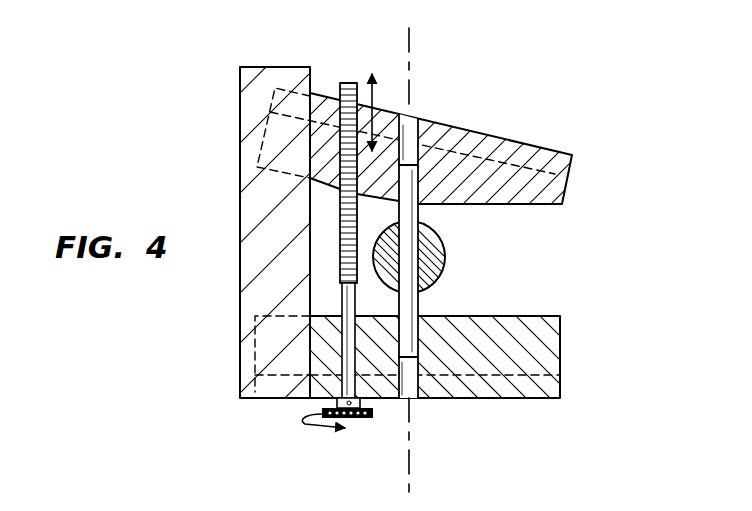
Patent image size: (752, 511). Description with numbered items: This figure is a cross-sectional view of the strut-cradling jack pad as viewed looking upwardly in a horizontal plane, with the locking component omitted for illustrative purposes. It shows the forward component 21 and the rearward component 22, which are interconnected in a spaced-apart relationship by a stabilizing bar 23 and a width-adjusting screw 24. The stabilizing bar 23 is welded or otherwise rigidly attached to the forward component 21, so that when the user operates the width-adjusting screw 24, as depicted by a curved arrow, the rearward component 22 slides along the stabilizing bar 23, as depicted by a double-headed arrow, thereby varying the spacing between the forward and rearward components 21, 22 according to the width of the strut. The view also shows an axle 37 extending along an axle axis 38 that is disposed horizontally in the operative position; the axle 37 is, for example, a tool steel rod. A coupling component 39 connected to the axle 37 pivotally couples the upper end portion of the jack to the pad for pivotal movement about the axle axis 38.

The forward component 21 is at (560, 398).
The rearward component 22 is at (572, 155).
The stabilizing bar 23 is at (242, 66).
The width-adjusting screw 24 is at (345, 82).
The axle 37 is at (412, 213).
The axle axis 38 is at (410, 40).
The coupling component 39 is at (438, 266).